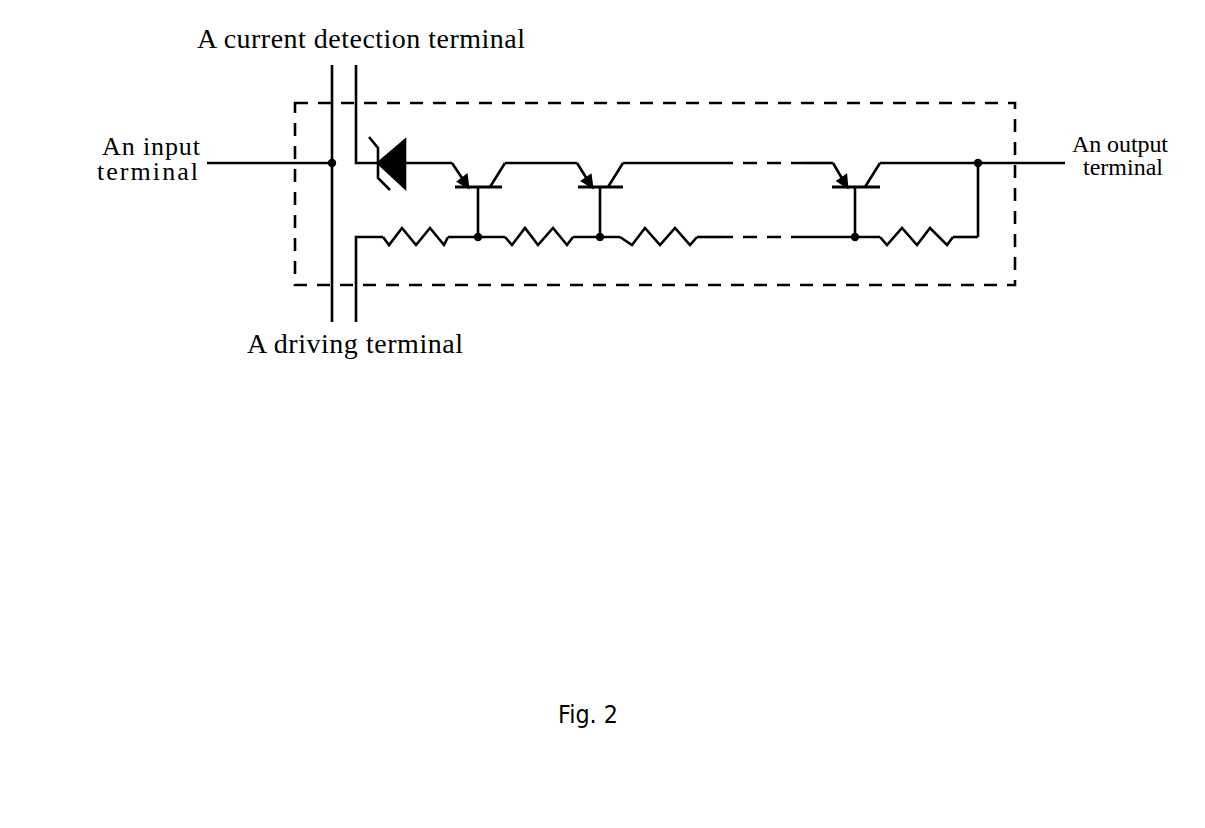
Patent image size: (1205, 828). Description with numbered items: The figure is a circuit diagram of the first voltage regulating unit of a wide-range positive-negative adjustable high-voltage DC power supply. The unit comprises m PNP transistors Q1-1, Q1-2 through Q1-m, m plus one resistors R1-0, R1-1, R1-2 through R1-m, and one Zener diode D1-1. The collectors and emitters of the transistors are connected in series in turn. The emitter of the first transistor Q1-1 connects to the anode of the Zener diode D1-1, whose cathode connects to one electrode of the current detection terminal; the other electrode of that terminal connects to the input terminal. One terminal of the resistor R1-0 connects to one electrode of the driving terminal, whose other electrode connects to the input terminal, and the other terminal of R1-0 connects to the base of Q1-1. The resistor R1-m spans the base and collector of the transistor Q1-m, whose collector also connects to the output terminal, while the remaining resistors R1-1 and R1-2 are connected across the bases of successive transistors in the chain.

The Zener diode D1-1 is at (392, 147).
The first PNP transistor Q1-1 is at (477, 180).
The second PNP transistor Q1-2 is at (598, 179).
The m-th PNP transistor Q1-m is at (856, 180).
The resistor R1-0 is at (413, 222).
The resistor R1-1 is at (537, 222).
The resistor R1-2 is at (658, 223).
The resistor R1-m is at (915, 223).